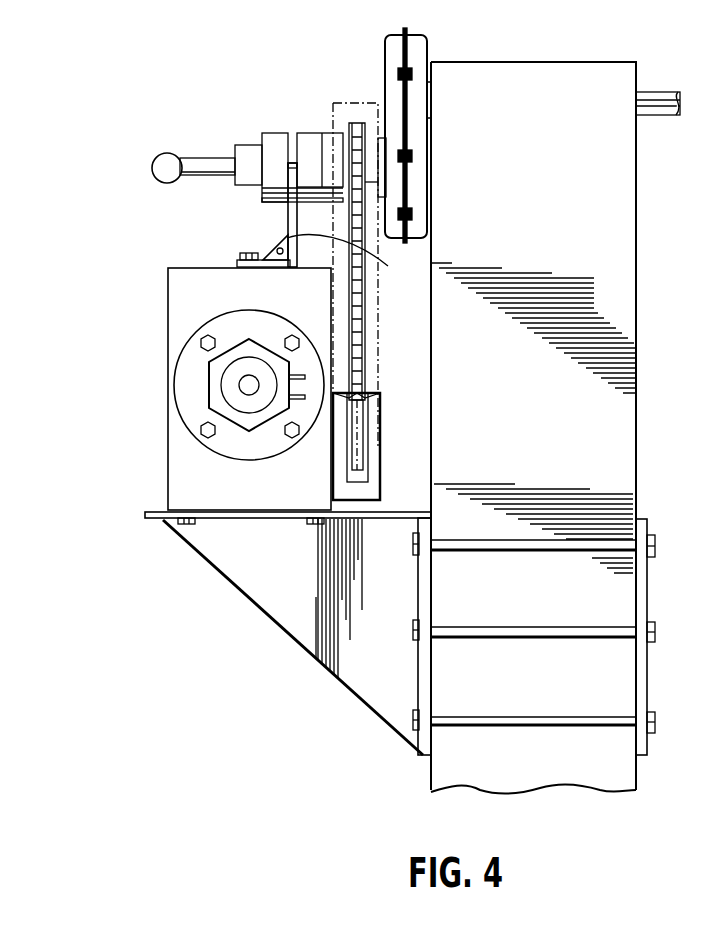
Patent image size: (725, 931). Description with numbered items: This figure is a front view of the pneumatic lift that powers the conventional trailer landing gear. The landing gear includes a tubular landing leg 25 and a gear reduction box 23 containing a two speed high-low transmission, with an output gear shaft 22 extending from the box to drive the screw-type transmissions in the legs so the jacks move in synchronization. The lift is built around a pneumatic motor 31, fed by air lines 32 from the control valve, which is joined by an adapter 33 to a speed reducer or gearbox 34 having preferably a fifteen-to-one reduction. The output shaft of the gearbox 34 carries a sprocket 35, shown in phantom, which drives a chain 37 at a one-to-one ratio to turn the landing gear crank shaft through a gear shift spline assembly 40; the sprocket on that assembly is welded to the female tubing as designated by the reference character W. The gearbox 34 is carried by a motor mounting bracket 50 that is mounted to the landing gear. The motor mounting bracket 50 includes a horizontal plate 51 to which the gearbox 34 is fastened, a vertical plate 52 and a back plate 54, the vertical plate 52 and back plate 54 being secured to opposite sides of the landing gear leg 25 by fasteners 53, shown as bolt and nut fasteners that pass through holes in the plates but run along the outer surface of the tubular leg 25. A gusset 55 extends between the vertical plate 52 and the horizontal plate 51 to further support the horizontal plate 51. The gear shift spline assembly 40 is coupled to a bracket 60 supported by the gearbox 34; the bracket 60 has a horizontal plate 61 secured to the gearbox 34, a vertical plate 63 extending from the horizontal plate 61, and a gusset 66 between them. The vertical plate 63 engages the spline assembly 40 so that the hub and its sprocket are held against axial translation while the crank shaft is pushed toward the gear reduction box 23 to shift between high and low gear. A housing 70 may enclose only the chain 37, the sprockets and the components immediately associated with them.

The output gear shaft 22 is at (660, 90).
The gear reduction box 23 is at (427, 52).
The tubular landing leg 25 is at (643, 282).
The pneumatic motor 31 is at (218, 392).
The air lines 32 is at (307, 377).
The adapter 33 is at (185, 348).
The gearbox 34 is at (168, 300).
The sprocket 35 is at (363, 417).
The chain 37 is at (368, 305).
The gear shift spline assembly 40 is at (215, 97).
The motor mounting bracket 50 is at (268, 688).
The horizontal plate 51 is at (297, 520).
The vertical plate 52 is at (417, 597).
The fasteners 53 is at (616, 568).
The back plate 54 is at (649, 603).
The gusset 55 is at (248, 597).
The bracket 60 is at (174, 204).
The horizontal plate 61 is at (237, 265).
The vertical plate 63 is at (293, 193).
The gusset 66 is at (268, 250).
The housing 70 is at (380, 479).
The weld W is at (417, 521).